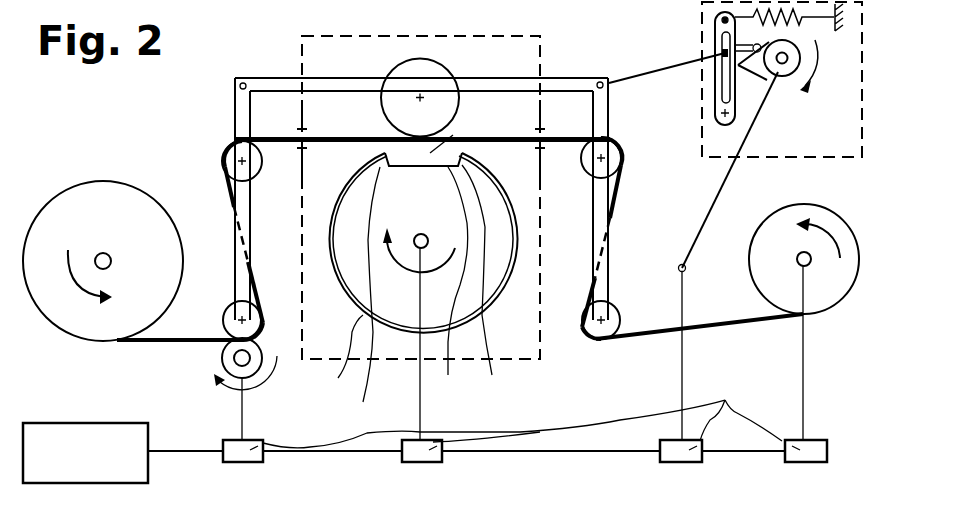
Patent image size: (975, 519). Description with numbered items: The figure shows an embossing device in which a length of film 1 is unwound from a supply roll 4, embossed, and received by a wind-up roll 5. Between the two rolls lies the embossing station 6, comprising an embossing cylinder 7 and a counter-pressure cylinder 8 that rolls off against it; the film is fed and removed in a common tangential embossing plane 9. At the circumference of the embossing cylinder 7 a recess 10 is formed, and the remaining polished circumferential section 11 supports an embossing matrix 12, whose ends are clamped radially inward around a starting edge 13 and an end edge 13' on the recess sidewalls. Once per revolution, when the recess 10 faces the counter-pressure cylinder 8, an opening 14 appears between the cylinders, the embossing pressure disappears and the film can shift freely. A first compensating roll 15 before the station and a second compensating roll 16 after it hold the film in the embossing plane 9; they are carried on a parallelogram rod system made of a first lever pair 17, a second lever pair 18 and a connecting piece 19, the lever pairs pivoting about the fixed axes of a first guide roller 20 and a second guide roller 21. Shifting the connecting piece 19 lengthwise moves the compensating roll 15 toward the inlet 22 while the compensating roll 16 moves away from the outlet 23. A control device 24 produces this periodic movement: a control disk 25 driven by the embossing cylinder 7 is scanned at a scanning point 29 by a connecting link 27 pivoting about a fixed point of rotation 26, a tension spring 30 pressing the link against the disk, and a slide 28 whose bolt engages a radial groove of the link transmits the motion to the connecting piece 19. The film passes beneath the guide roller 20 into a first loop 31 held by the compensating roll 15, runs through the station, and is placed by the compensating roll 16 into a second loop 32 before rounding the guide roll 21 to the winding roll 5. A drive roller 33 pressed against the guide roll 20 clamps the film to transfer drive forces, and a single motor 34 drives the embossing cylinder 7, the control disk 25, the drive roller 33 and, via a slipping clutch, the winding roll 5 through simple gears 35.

The length of film 1 is at (168, 345).
The supply roll 4 is at (78, 203).
The wind-up roll 5 is at (762, 250).
The embossing station 6 is at (535, 362).
The embossing cylinder 7 is at (362, 286).
The counter-pressure cylinder 8 is at (407, 73).
The embossing plane 9 is at (507, 135).
The recess 10 is at (453, 284).
The circumferential section 11 is at (407, 332).
The embossing matrix 12 is at (342, 358).
The starting edge 13 is at (364, 296).
The end edge 13' is at (485, 283).
The opening 14 is at (453, 135).
The first compensating roll 15 is at (222, 157).
The second compensating roll 16 is at (612, 153).
The first lever pair 17 is at (235, 115).
The second lever pair 18 is at (608, 257).
The connecting piece 19 is at (272, 82).
The first guide roller 20 is at (228, 318).
The second guide roller 21 is at (602, 342).
The inlet 22 is at (297, 147).
The outlet 23 is at (552, 148).
The control device 24 is at (855, 153).
The control disk 25 is at (785, 70).
The point of rotation 26 is at (733, 122).
The connecting link 27 is at (717, 22).
The slide 28 is at (658, 68).
The scanning point 29 is at (752, 78).
The tension spring 30 is at (803, 22).
The first loop 31 is at (225, 188).
The second loop 32 is at (620, 182).
The drive roller 33 is at (223, 360).
The motor 34 is at (60, 435).
The gears 35 is at (525, 420).